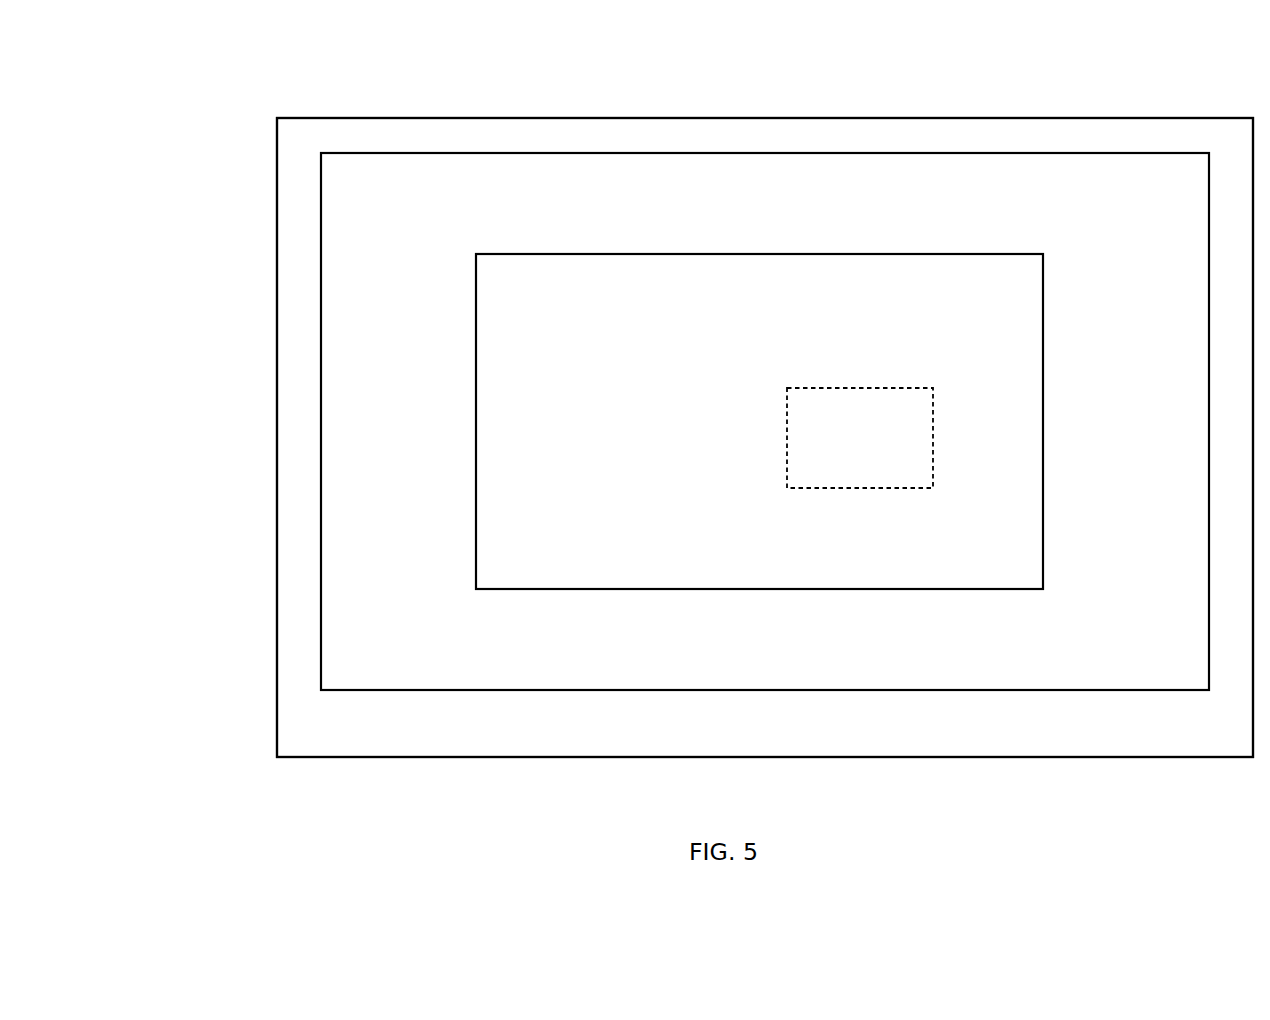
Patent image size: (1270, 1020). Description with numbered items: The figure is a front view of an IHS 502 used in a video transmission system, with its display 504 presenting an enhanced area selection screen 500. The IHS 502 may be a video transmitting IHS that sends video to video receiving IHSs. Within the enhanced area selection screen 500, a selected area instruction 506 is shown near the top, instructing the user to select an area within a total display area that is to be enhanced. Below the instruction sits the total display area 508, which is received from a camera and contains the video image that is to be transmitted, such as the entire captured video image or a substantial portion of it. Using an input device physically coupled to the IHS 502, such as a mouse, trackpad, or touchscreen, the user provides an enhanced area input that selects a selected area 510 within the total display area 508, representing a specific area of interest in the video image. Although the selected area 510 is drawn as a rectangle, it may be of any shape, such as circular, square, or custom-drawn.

The enhanced area selection screen 500 is at (306, 80).
The IHS 502 is at (1234, 752).
The display 504 is at (320, 420).
The selected area instruction 506 is at (980, 185).
The total display area 508 is at (1044, 411).
The selected area 510 is at (787, 432).